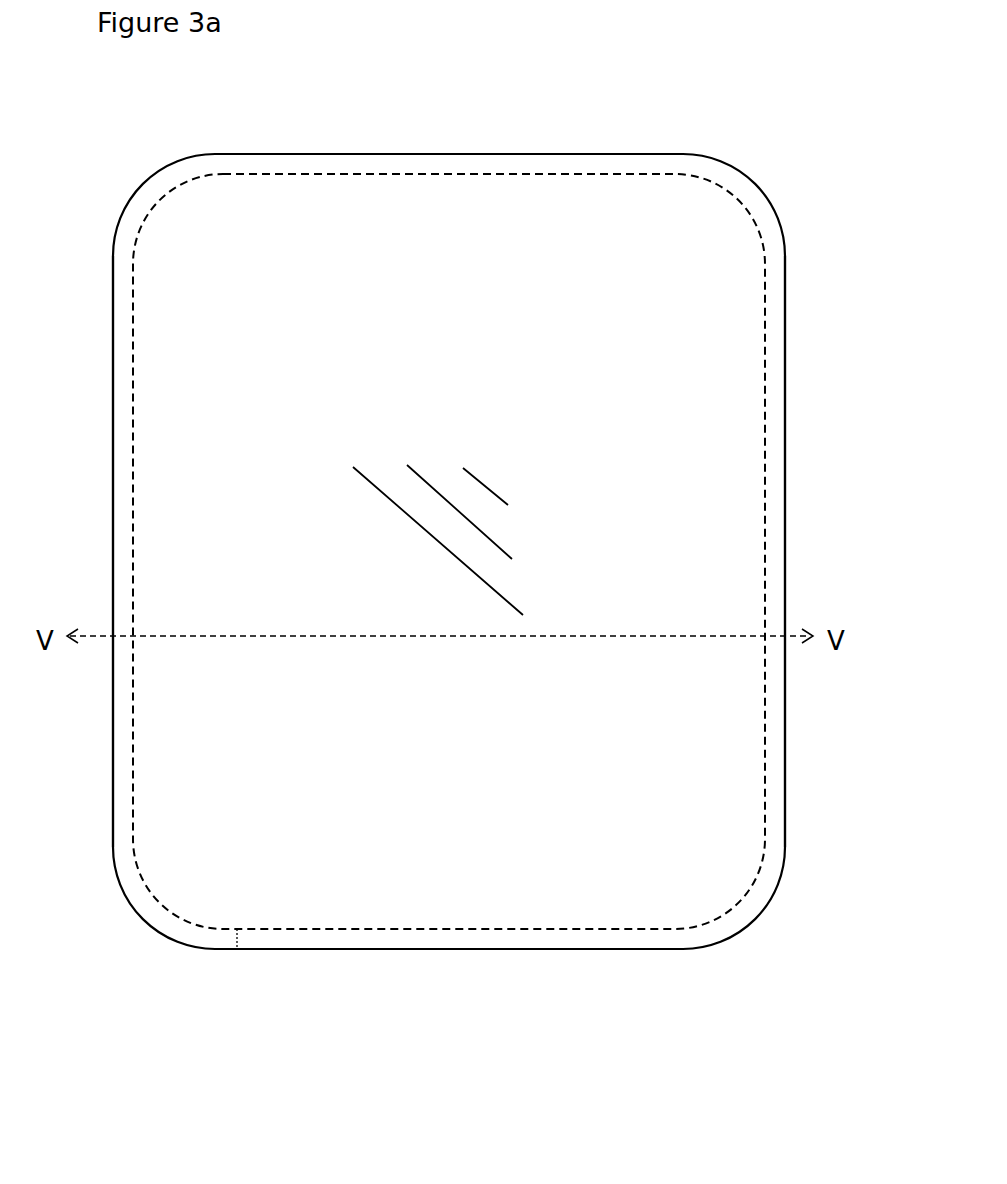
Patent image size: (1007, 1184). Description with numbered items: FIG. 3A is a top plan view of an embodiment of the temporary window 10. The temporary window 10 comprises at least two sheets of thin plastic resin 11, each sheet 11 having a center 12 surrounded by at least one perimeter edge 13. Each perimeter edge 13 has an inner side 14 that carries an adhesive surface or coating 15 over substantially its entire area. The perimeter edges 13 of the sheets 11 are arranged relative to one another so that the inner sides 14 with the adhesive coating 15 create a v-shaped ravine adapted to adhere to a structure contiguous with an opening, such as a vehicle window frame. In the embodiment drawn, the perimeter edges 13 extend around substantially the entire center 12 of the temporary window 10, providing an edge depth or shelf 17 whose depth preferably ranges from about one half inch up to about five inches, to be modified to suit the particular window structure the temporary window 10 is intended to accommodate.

The temporary window 10 is at (297, 110).
The sheet of thin plastic resin 11 is at (212, 188).
The center 12 is at (262, 448).
The perimeter edge 13 is at (465, 154).
The inner side 14 is at (355, 165).
The adhesive surface/coating 15 is at (597, 163).
The edge depth/shelf 17 is at (232, 938).